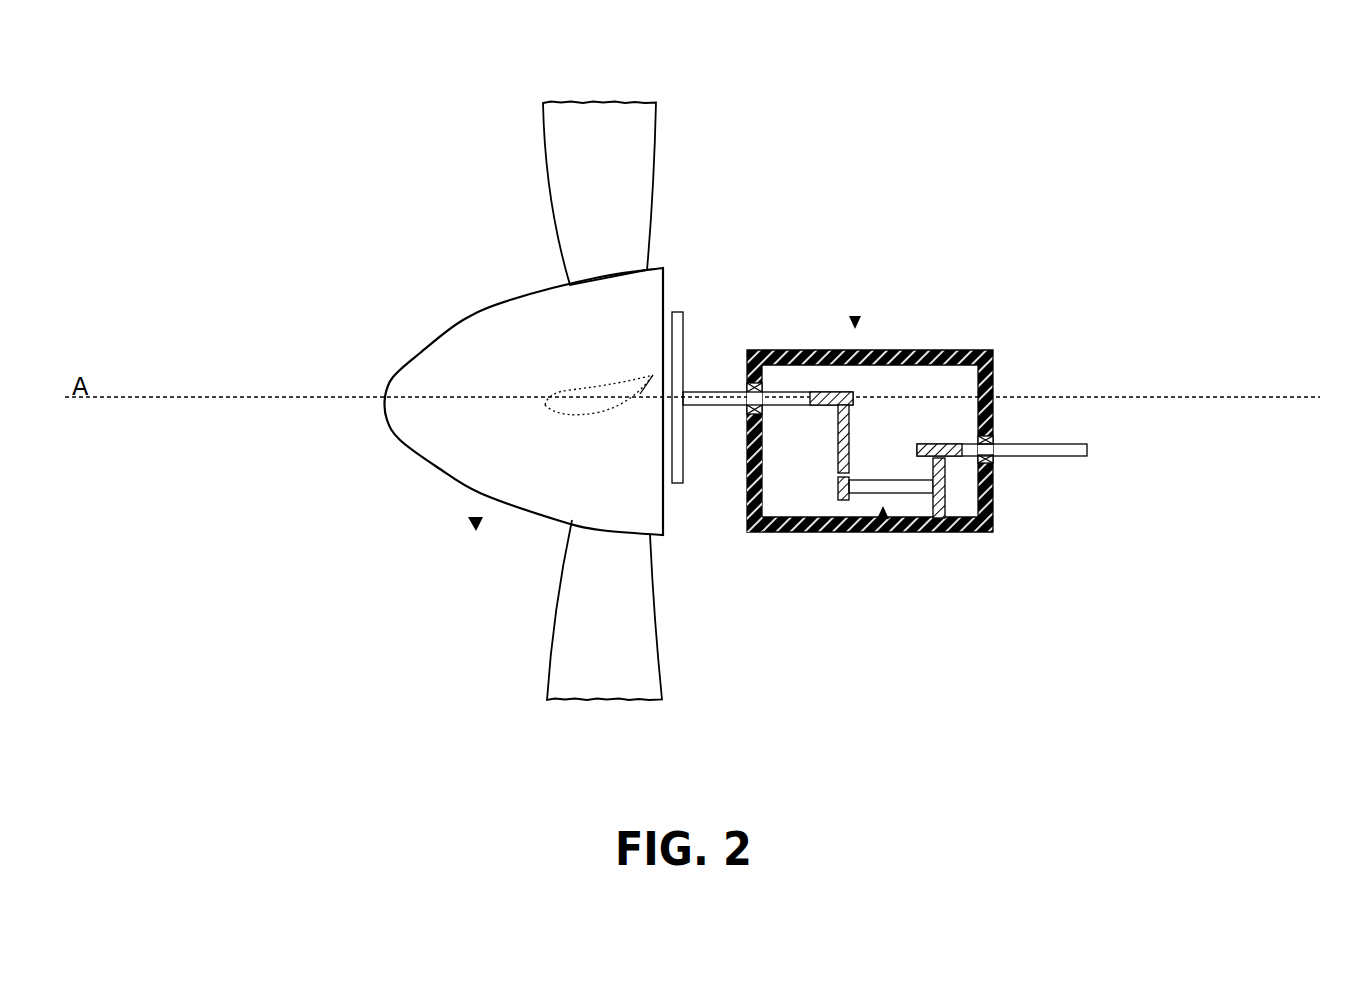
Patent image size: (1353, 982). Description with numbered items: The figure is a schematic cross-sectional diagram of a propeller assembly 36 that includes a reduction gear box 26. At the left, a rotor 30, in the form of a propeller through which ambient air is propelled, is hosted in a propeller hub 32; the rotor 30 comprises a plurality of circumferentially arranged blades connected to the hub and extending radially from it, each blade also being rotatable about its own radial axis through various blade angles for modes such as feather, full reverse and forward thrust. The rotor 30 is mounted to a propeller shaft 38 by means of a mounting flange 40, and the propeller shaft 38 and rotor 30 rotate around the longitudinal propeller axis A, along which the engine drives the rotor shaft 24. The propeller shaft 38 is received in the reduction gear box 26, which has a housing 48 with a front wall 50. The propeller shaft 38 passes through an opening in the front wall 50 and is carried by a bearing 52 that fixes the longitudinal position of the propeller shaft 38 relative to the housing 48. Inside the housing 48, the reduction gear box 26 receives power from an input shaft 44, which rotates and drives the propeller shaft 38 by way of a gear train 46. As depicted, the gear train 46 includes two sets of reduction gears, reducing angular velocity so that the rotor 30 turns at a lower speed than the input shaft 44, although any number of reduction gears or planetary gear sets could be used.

The rotor shaft 24 is at (707, 393).
The reduction gear box 26 is at (782, 456).
The rotor 30 is at (567, 137).
The propeller hub 32 is at (482, 365).
The propeller assembly 36 is at (475, 518).
The propeller shaft 38 is at (806, 405).
The mounting flange 40 is at (685, 312).
The input shaft 44 is at (1045, 450).
The gear train 46 is at (883, 532).
The housing 48 is at (947, 352).
The front wall 50 is at (747, 440).
The bearing 52 is at (745, 410).